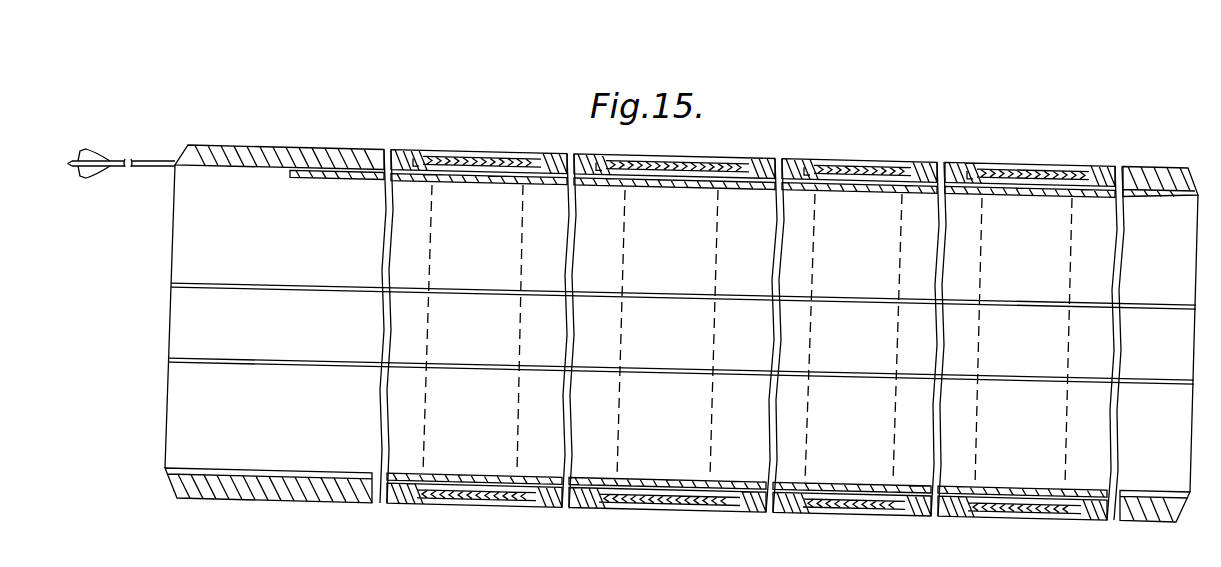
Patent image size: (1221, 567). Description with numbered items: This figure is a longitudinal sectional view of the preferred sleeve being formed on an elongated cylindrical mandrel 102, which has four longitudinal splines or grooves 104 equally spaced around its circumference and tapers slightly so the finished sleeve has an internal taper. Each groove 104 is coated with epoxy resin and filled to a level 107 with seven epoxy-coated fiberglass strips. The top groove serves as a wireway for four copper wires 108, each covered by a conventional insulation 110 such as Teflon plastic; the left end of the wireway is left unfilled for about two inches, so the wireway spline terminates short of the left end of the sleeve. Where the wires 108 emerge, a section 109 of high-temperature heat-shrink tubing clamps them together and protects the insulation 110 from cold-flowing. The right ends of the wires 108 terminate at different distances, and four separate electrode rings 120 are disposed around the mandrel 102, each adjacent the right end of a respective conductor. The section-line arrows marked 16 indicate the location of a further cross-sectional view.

The mandrel 102 is at (233, 131).
The longitudinal splines or grooves 104 is at (284, 283).
The level 107 is at (766, 160).
The copper wires 108 is at (80, 152).
The section of heat-shrink tubing 109 is at (282, 170).
The insulation 110 is at (100, 154).
The electrode rings 120 is at (490, 152).
The section line 16- 16 is at (1000, 230).